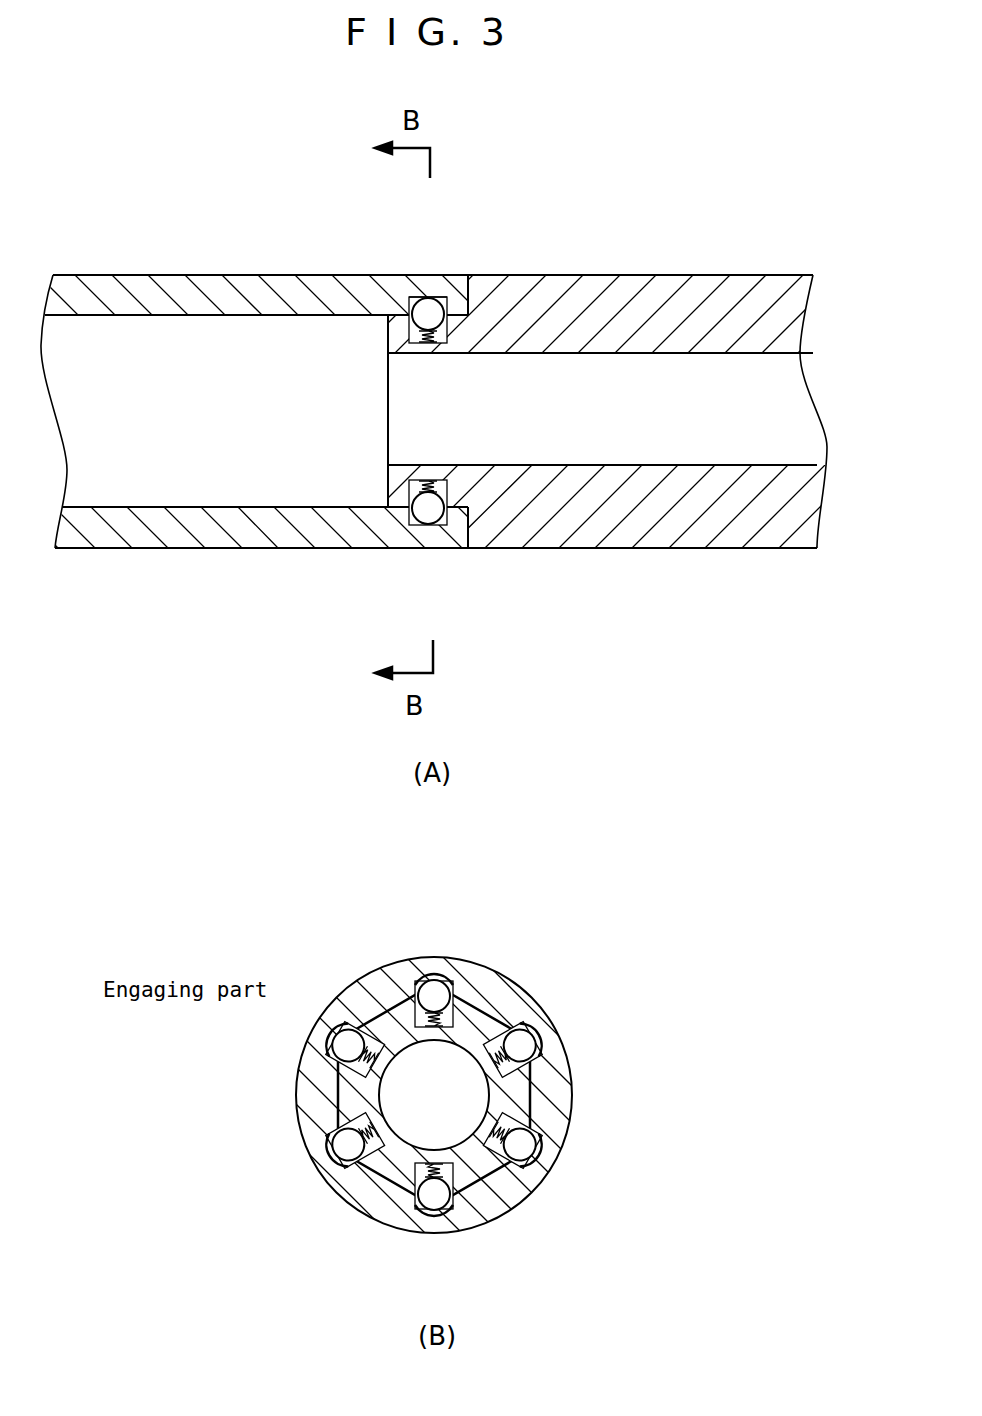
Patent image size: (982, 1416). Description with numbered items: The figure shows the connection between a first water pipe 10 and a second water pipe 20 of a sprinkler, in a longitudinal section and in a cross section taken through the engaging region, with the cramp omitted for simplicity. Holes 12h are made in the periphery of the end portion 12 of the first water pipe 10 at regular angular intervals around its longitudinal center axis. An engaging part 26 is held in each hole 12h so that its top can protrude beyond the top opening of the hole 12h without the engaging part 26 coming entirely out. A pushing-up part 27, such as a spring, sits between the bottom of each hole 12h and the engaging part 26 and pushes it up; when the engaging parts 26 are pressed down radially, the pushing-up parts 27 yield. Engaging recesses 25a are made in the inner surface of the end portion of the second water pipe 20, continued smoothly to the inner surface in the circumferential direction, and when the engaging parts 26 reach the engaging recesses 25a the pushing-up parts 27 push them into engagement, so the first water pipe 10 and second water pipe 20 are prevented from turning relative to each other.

The first water pipe 10 is at (707, 290).
The end portion 12 is at (403, 490).
The hole 12h is at (402, 1162).
The second water pipe 20 is at (212, 292).
The engaging recess 25a is at (408, 313).
The engaging part 26 is at (429, 312).
The pushing-up part 27 is at (447, 338).